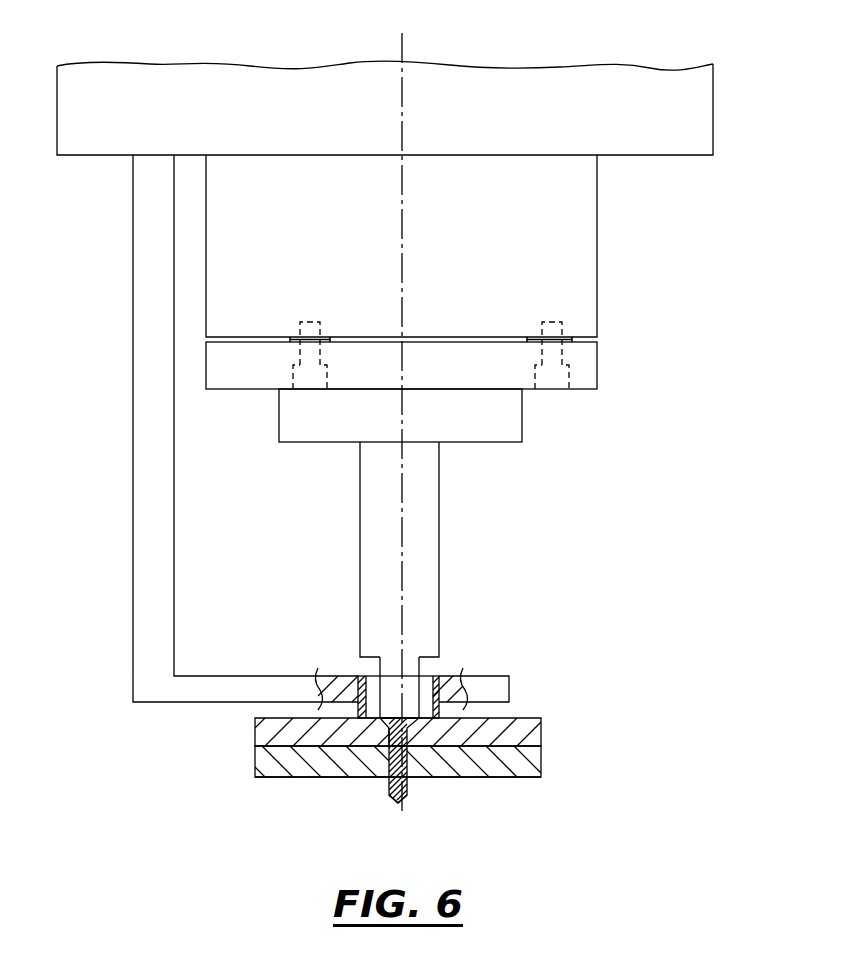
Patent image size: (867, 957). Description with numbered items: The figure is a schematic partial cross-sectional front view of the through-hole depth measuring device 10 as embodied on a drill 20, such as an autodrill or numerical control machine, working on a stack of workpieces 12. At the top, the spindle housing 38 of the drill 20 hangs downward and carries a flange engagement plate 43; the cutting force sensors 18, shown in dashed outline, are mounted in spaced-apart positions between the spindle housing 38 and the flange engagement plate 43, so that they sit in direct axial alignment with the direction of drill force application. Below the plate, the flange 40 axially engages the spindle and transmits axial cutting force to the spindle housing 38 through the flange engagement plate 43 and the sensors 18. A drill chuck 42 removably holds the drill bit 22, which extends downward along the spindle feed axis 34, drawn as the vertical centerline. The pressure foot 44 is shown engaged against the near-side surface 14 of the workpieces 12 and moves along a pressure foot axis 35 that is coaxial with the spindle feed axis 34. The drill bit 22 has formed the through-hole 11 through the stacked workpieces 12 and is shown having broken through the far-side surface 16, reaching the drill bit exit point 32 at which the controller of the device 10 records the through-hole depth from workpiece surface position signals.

The device for measuring through-hole depth 10 is at (338, 333).
The through-hole 11 is at (404, 760).
The workpiece 12 is at (523, 745).
The upper workpiece plate 14 is at (522, 718).
The far-side surface 16 is at (522, 778).
The cutting force sensors 18 is at (288, 338).
The drill 20 is at (690, 132).
The drill bit 22 is at (407, 741).
The drill bit exit point 32 is at (391, 784).
The spindle feed axis 34 is at (398, 806).
The pressure foot axis 35 is at (398, 799).
The spindle housing 38 is at (582, 254).
The flange 40 is at (500, 420).
The drill chuck 42 is at (405, 672).
The flange engagement plate 43 is at (590, 373).
The pressure foot 44 is at (148, 587).